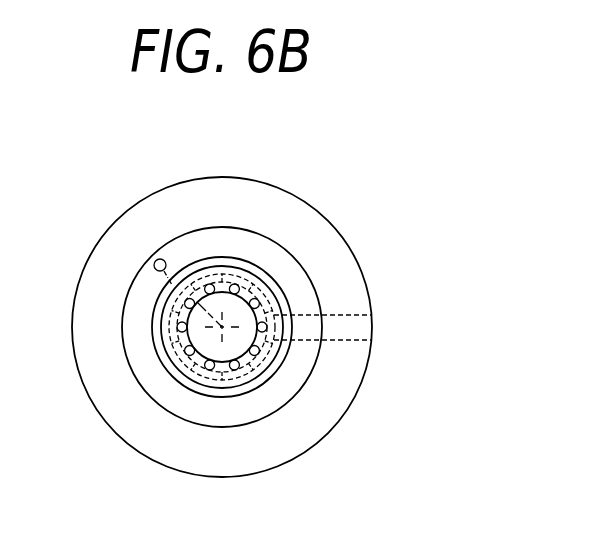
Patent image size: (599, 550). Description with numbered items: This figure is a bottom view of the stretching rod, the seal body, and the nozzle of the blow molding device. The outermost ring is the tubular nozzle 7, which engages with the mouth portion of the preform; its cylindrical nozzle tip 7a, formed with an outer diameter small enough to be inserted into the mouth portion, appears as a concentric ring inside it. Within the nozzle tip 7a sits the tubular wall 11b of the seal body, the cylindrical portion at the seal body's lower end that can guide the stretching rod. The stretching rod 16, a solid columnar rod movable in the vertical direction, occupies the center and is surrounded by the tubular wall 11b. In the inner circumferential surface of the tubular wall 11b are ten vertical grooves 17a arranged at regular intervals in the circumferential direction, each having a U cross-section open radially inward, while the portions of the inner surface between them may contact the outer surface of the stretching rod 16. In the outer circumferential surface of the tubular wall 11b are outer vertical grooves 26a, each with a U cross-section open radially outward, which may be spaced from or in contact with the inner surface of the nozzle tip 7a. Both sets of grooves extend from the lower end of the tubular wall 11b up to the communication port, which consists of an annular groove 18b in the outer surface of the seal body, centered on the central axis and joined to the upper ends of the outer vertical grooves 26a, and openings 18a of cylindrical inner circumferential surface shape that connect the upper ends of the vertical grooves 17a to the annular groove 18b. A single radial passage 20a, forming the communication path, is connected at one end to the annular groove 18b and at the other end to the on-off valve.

The nozzle 7 is at (298, 196).
The nozzle tip 7a is at (150, 344).
The outer vertical groove 26a is at (246, 275).
The tubular wall 11b is at (187, 370).
The stretching rod 16 is at (222, 288).
The opening 18a is at (263, 300).
The annular groove 18b is at (282, 327).
The vertical groove 17a is at (258, 351).
The radial passage 20a is at (350, 312).